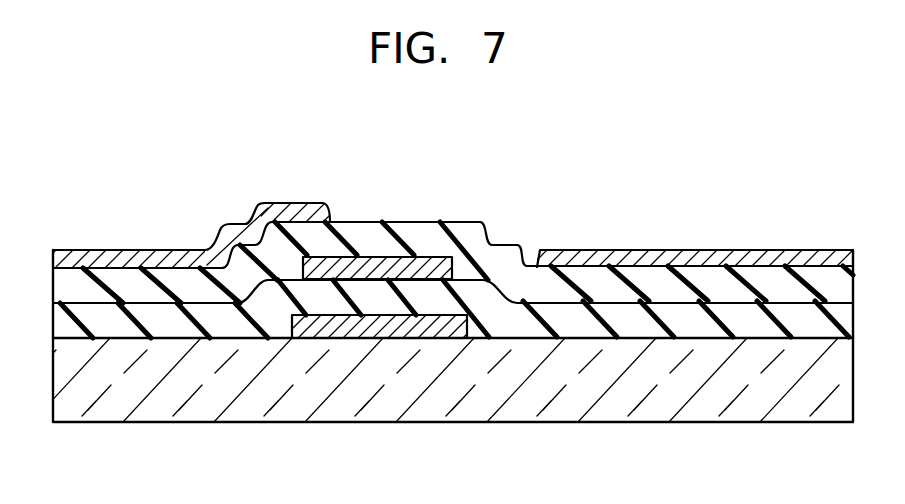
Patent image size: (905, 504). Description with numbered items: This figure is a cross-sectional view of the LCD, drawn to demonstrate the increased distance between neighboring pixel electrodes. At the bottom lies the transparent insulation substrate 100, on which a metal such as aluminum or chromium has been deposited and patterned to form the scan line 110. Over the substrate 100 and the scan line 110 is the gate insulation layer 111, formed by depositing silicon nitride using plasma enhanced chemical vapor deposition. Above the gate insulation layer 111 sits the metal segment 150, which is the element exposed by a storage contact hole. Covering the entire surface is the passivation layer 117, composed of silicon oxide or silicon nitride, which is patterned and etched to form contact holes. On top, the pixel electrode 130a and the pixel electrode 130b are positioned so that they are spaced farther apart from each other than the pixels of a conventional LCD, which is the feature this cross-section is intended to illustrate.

The transparent insulation substrate 100 is at (680, 400).
The scan line 110 is at (365, 330).
The gate insulation layer 111 is at (558, 340).
The passivation layer 117 is at (273, 262).
The metal segment 150 is at (367, 266).
The pixel electrode 130a is at (130, 258).
The pixel electrode 130b is at (694, 258).